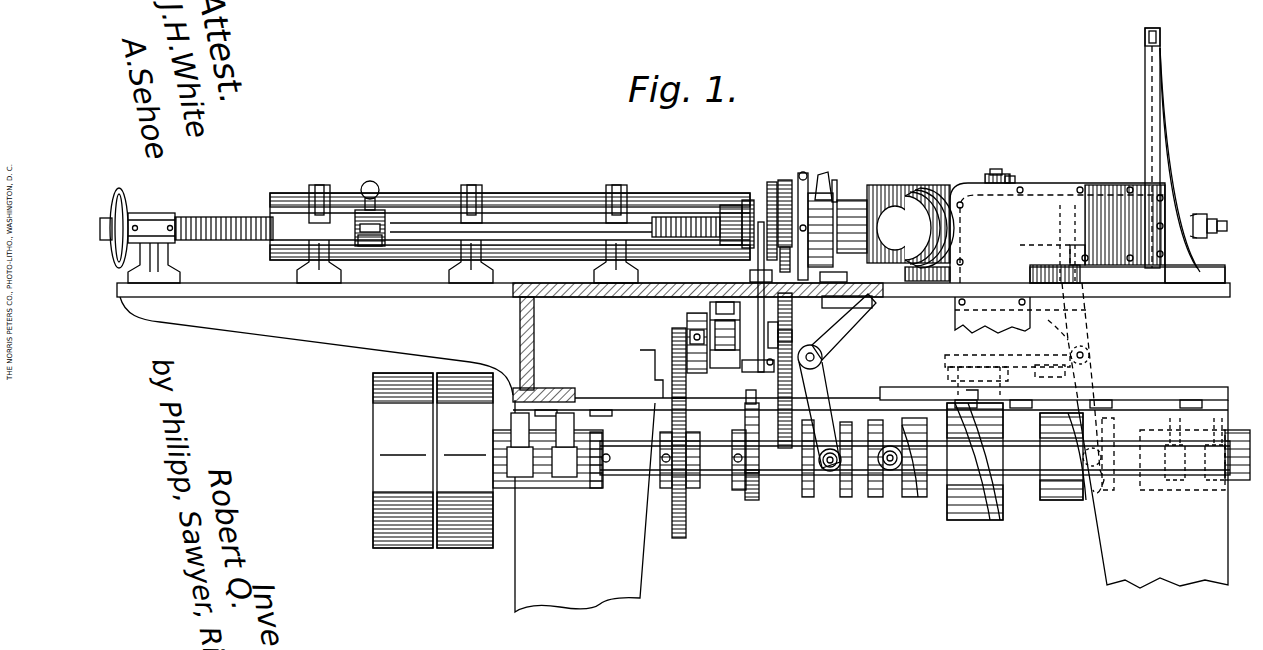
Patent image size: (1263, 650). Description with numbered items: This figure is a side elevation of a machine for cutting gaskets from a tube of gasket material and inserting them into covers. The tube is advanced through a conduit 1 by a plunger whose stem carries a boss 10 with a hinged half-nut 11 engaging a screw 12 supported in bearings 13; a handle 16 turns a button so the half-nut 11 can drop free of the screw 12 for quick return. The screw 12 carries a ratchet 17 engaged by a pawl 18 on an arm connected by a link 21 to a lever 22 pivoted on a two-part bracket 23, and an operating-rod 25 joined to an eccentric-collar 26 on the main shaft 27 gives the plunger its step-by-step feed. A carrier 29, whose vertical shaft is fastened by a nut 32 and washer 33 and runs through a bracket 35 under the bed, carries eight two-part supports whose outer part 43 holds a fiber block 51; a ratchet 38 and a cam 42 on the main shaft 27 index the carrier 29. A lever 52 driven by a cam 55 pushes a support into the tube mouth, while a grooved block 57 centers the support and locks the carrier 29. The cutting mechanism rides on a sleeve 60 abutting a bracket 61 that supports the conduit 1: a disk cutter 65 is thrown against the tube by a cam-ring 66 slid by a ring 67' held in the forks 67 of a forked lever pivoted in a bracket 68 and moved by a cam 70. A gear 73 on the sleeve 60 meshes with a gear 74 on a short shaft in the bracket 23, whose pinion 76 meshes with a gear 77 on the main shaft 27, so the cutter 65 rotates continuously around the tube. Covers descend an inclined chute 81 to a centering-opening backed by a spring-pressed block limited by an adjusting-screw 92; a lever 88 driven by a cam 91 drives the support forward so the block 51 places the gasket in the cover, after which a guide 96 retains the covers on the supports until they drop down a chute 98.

The conduit 1 is at (533, 200).
The boss 10 is at (380, 212).
The half-nut 11 is at (370, 248).
The screw 12 is at (255, 218).
The bearings 13 is at (163, 215).
The handle 16 is at (380, 178).
The ratchet 17 is at (748, 205).
The pawl 18 is at (733, 212).
The link 21 is at (758, 276).
The lever 22 is at (780, 330).
The two-part bracket 23 is at (722, 372).
The operating-rod 25 is at (745, 400).
The eccentric-collar 26 is at (753, 502).
The main shaft 27 is at (790, 472).
The carrier 29 is at (950, 195).
The nut 32 is at (1000, 172).
The washer 33 is at (1011, 181).
The bracket 35 is at (1058, 330).
The ratchet 38 is at (1007, 377).
The cam 42 is at (975, 461).
The plunger part 43 is at (905, 190).
The block 51 is at (915, 228).
The lever 52 is at (893, 424).
The cam 55 is at (899, 458).
The grooved block 57 is at (862, 288).
The sleeve 60 is at (852, 202).
The bracket 61 is at (771, 182).
The disk cutter 65 is at (829, 176).
The cam-ring 66 is at (827, 237).
The forks 67 is at (819, 406).
The ring 67' is at (813, 216).
The bracket 68 is at (844, 327).
The cam 70 is at (812, 497).
The gear 73 is at (786, 180).
The gear 74 is at (780, 392).
The pinion 76 is at (672, 332).
The gear 77 is at (686, 426).
The chute 81 is at (1146, 131).
The lever 88 is at (1094, 392).
The cam 91 is at (1063, 456).
The adjusting-screw 92 is at (1218, 221).
The guide 96 is at (1062, 236).
The chute 98 is at (1022, 315).